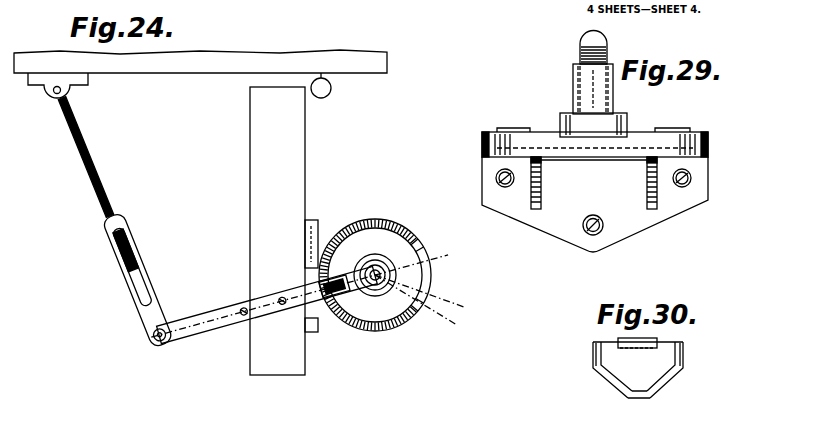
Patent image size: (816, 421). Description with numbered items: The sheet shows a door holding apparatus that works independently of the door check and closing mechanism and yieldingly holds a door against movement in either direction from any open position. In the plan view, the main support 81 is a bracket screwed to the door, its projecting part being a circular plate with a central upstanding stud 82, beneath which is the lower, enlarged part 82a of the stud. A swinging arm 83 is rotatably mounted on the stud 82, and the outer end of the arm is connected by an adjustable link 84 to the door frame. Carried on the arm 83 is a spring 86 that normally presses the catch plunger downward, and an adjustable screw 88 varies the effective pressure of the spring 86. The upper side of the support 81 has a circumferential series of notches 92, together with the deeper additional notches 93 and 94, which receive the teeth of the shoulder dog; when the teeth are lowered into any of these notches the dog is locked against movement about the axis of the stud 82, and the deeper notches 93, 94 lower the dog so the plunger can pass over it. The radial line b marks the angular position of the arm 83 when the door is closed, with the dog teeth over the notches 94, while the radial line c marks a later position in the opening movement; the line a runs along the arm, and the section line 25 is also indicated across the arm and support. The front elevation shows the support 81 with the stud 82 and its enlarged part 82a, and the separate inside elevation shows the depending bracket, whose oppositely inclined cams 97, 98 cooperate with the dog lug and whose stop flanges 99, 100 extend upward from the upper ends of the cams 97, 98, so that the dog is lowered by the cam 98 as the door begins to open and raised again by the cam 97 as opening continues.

In FIG. 24, the axis / center line 25 is at (221, 326).
In FIG. 24, the main support 81 is at (306, 218).
In FIG. 29, the main support 81 is at (553, 226).
In FIG. 29, the stud 82 is at (613, 92).
In FIG. 29, the enlarged part of the stud 82a is at (628, 126).
In FIG. 24, the swinging arm 83 is at (199, 321).
In FIG. 24, the adjustable link 84 is at (118, 228).
In FIG. 24, the spring 86 is at (301, 290).
In FIG. 24, the adjustable screw 88 is at (380, 258).
In FIG. 24, the notches 92 is at (371, 331).
In FIG. 24, the additional notches 93 is at (423, 250).
In FIG. 24, the notches 94 is at (424, 304).
In FIG. 30, the cam 97 is at (621, 384).
In FIG. 30, the cam 98 is at (665, 380).
In FIG. 30, the stop flange 99 is at (594, 357).
In FIG. 30, the stop flange 100 is at (684, 352).
In FIG. 24, the center line a is at (254, 331).
In FIG. 24, the radial line b is at (425, 295).
In FIG. 24, the radial line c is at (422, 307).